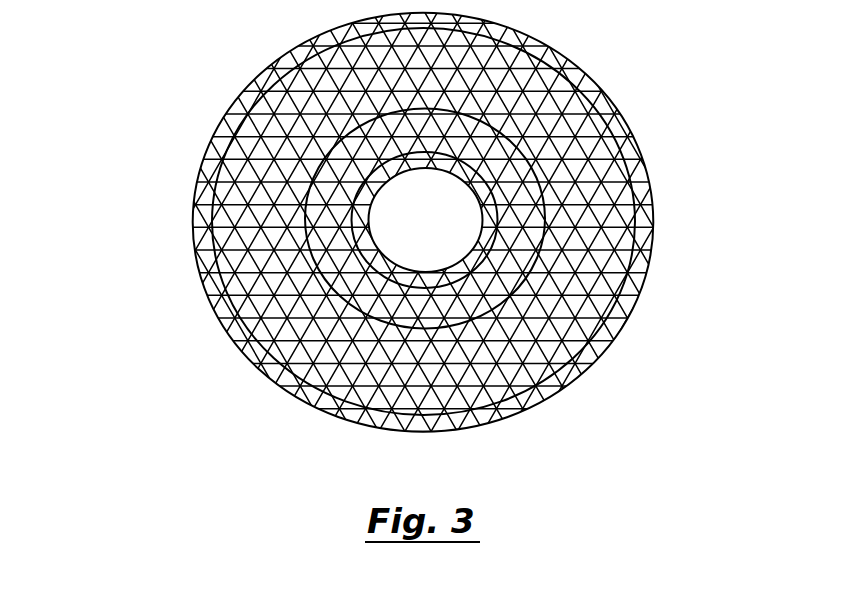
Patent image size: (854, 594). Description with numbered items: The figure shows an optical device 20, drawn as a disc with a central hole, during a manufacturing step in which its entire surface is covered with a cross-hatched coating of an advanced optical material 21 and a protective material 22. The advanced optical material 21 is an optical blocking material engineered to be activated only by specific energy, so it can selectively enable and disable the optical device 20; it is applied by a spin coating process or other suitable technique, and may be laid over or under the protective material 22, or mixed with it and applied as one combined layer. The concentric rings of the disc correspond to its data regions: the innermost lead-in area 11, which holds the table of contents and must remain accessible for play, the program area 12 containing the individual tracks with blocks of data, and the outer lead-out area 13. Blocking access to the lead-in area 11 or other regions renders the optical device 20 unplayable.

The optical device 20 is at (427, 228).
The advanced optical material 21 is at (427, 222).
The protective material 22 is at (240, 202).
The lead-out area 13 is at (640, 167).
The program area 12 is at (595, 253).
The lead-in area 11 is at (513, 265).